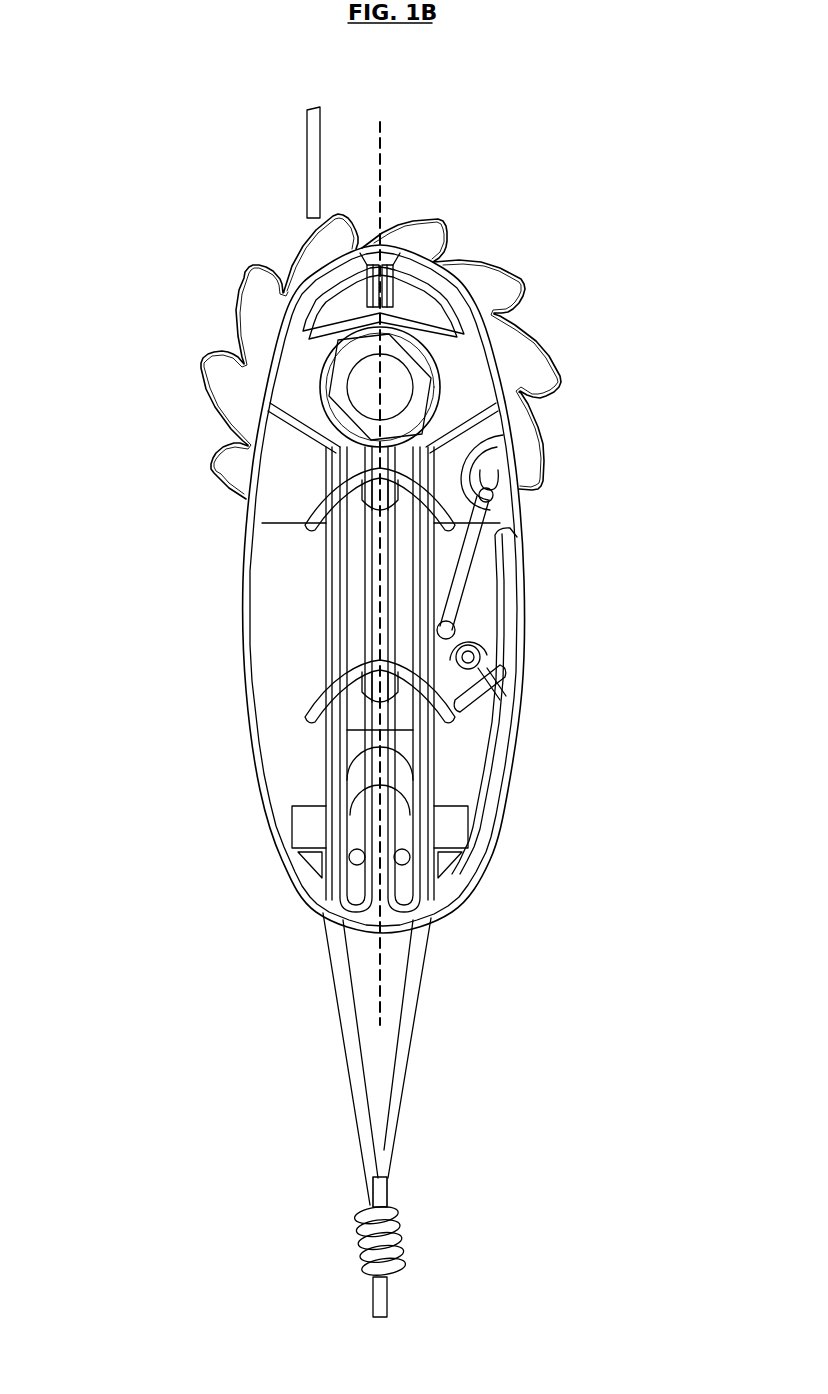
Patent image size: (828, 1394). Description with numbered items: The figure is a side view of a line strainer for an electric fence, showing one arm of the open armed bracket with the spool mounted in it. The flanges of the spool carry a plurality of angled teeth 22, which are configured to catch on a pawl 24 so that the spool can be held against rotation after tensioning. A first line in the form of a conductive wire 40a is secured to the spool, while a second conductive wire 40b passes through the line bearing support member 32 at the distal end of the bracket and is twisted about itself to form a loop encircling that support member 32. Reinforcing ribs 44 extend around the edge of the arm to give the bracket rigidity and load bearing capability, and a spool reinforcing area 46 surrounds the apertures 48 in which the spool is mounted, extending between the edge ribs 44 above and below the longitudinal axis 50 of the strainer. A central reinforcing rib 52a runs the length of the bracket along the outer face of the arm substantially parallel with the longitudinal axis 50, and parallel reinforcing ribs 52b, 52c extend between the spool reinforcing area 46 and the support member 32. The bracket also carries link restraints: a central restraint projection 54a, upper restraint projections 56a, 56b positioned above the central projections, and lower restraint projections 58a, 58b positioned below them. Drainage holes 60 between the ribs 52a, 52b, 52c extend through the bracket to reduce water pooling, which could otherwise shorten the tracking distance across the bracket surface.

The angled teeth 22 is at (426, 232).
The pawl 24 is at (492, 496).
The line bearing support member 32 is at (457, 932).
The first line (conductive wire) 40a is at (306, 140).
The second line (conductive wire) 40b is at (400, 1107).
The reinforcing ribs 44 is at (240, 600).
The spool reinforcing area 46 is at (463, 378).
The apertures 48 is at (522, 270).
The longitudinal axis 50 is at (382, 558).
The central reinforcing rib 52a is at (367, 290).
The parallel reinforcing rib 52b is at (343, 815).
The parallel reinforcing rib 52c is at (467, 823).
The central restraint projection 54a is at (333, 465).
The upper restraint projection 56a is at (470, 530).
The upper restraint projection 56b is at (453, 720).
The lower restraint projection 58a is at (313, 527).
The lower restraint projection 58b is at (313, 717).
The drainage holes 60 is at (400, 867).